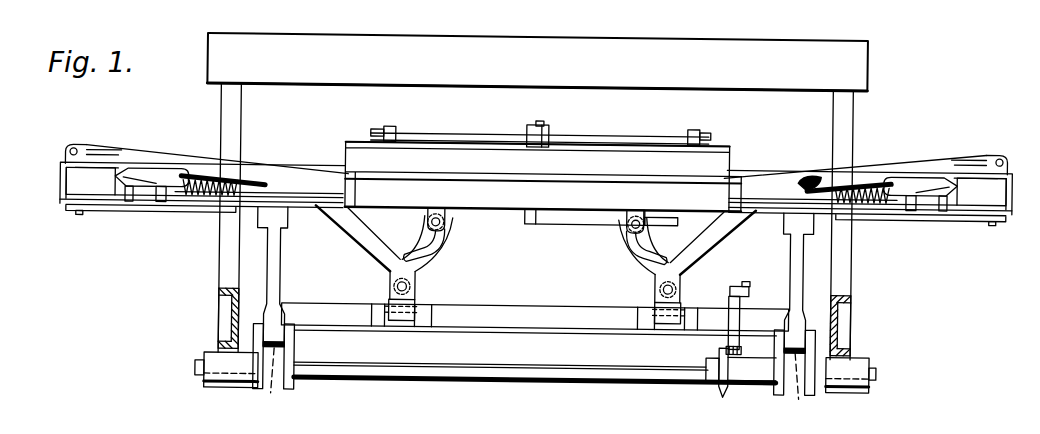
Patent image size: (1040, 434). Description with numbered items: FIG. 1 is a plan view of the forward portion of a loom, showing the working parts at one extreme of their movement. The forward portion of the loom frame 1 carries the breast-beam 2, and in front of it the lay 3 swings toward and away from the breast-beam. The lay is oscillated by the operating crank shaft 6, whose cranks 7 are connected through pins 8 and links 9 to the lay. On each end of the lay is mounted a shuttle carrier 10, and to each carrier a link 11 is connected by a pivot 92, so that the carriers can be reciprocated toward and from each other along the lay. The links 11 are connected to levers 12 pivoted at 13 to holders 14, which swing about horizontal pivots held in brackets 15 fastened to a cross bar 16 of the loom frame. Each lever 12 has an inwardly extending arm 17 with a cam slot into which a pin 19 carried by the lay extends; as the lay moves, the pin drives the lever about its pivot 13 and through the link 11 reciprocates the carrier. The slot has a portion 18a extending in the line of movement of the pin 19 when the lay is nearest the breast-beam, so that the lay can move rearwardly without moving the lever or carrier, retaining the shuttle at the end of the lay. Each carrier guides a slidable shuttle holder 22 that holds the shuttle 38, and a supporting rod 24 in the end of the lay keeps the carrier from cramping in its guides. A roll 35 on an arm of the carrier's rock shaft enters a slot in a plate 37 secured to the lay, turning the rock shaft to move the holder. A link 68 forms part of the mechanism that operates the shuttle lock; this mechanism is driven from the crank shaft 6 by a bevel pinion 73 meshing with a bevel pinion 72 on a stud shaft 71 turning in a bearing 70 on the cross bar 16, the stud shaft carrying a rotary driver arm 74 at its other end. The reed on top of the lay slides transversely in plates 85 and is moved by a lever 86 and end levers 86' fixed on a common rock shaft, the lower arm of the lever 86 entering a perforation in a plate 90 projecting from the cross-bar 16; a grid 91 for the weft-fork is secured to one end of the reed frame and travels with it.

The loom frame 1 is at (243, 101).
The breast-beam 2 is at (597, 33).
The lay 3 is at (60, 184).
The operating crank shaft 6 is at (490, 370).
The cranks 7 is at (298, 350).
The pins 8 is at (532, 384).
The links 9 is at (276, 254).
The shuttle carrier 10 is at (985, 213).
The links 11 is at (136, 151).
The levers 12 is at (353, 221).
The pivot 13 is at (416, 285).
The holders 14 is at (400, 304).
The brackets 15 is at (428, 311).
The cross bar 16 is at (548, 312).
The arm 17 is at (432, 257).
The slot portion 18a is at (452, 236).
The pin 19 is at (450, 222).
The shuttle holder 22 is at (155, 171).
The supporting rod 24 is at (270, 182).
The roll 35 is at (78, 216).
The plate 37 is at (163, 213).
The shuttle 38 is at (812, 174).
The link 68 is at (560, 221).
The bearing 70 is at (736, 316).
The stud shaft 71 is at (753, 292).
The bevel pinion 72 is at (745, 347).
The bevel pinion 73 is at (722, 388).
The rotary arm 74 is at (753, 275).
The plates 85 is at (357, 197).
The lever 86 is at (523, 125).
The levers 86' is at (543, 121).
The plate 90 is at (546, 118).
The grid 91 is at (740, 205).
The pivots 92 is at (78, 143).